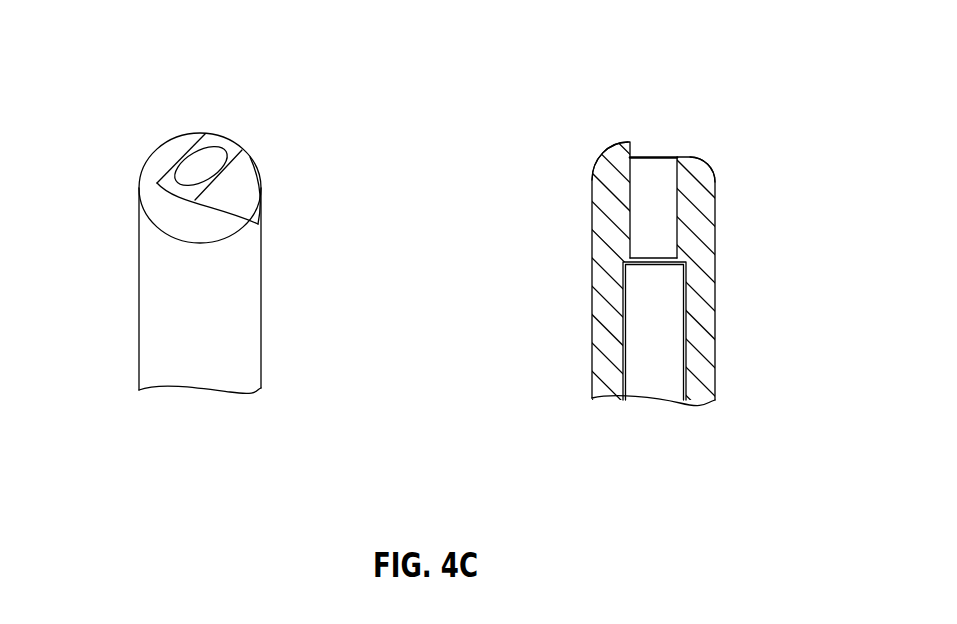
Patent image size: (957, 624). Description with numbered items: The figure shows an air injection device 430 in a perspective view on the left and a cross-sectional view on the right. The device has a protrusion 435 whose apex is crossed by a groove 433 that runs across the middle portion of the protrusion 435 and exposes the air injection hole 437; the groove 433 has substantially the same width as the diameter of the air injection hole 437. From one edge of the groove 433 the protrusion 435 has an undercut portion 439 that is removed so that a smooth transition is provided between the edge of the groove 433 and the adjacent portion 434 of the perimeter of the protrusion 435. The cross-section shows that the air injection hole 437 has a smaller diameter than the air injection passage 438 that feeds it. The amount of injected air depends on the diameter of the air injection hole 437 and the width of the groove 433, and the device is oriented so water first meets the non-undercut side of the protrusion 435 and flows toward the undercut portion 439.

The air injection device 430 is at (130, 52).
The groove 433 is at (170, 190).
The adjacent portion of the perimeter of the protrusion 434 is at (262, 223).
The protrusion 435 is at (150, 181).
The air injection hole 437 is at (210, 160).
The air injection passage 438 is at (653, 390).
The undercut portion 439 is at (248, 197).